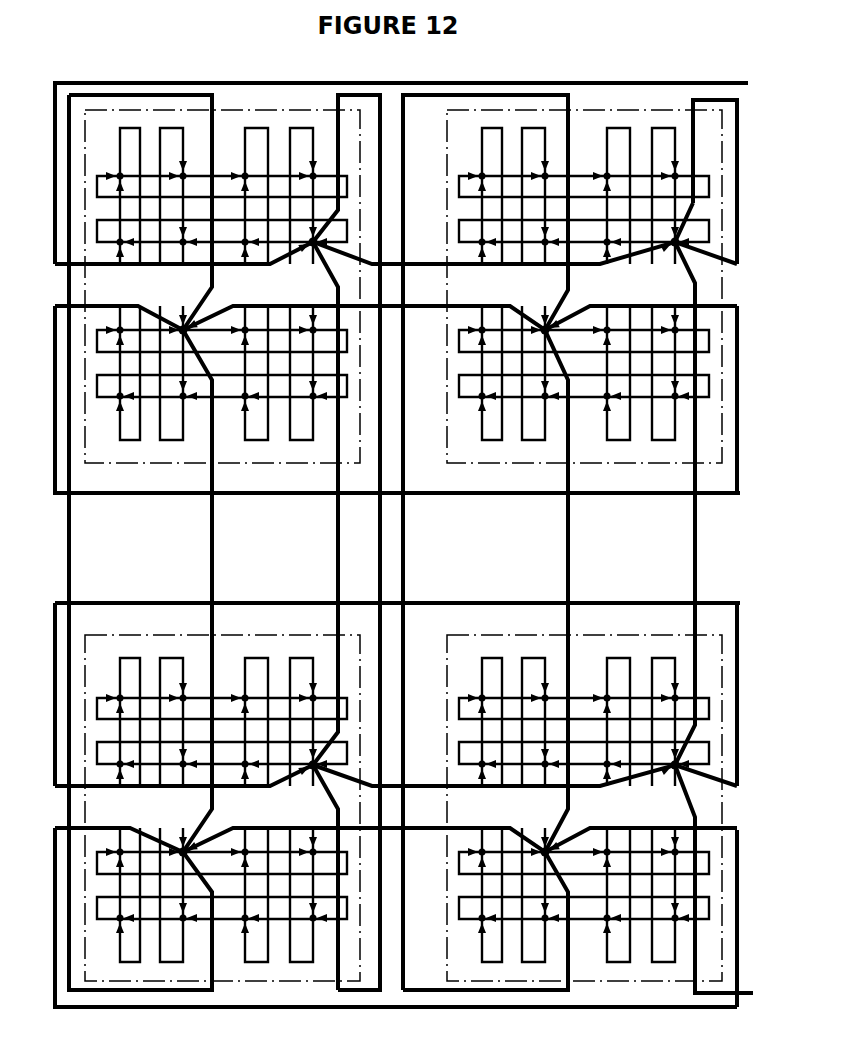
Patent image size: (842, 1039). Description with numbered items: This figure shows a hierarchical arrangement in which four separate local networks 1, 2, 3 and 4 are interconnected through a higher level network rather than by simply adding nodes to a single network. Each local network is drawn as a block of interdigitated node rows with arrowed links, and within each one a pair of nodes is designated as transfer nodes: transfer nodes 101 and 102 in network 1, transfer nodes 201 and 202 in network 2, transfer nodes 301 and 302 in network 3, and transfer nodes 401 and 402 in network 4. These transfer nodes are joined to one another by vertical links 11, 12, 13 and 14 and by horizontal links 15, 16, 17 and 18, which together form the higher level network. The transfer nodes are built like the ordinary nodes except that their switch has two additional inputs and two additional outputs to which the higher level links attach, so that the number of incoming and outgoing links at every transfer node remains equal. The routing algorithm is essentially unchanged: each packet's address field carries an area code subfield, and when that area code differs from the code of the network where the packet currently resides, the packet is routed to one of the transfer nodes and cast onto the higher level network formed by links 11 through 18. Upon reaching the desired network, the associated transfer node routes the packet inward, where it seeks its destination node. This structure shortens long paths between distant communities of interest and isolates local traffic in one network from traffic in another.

The network 1 is at (131, 468).
The network 2 is at (461, 468).
The network 3 is at (472, 636).
The network 4 is at (140, 636).
The vertical link 11 is at (212, 540).
The vertical link 12 is at (338, 550).
The vertical link 13 is at (568, 544).
The vertical link 14 is at (695, 544).
The horizontal link 15 is at (423, 262).
The horizontal link 16 is at (421, 312).
The horizontal link 17 is at (423, 786).
The horizontal link 18 is at (421, 836).
The transfer node 101 is at (181, 323).
The transfer node 102 is at (311, 251).
The transfer node 201 is at (544, 323).
The transfer node 202 is at (671, 251).
The transfer node 301 is at (545, 844).
The transfer node 302 is at (671, 773).
The transfer node 401 is at (178, 844).
The transfer node 402 is at (311, 773).